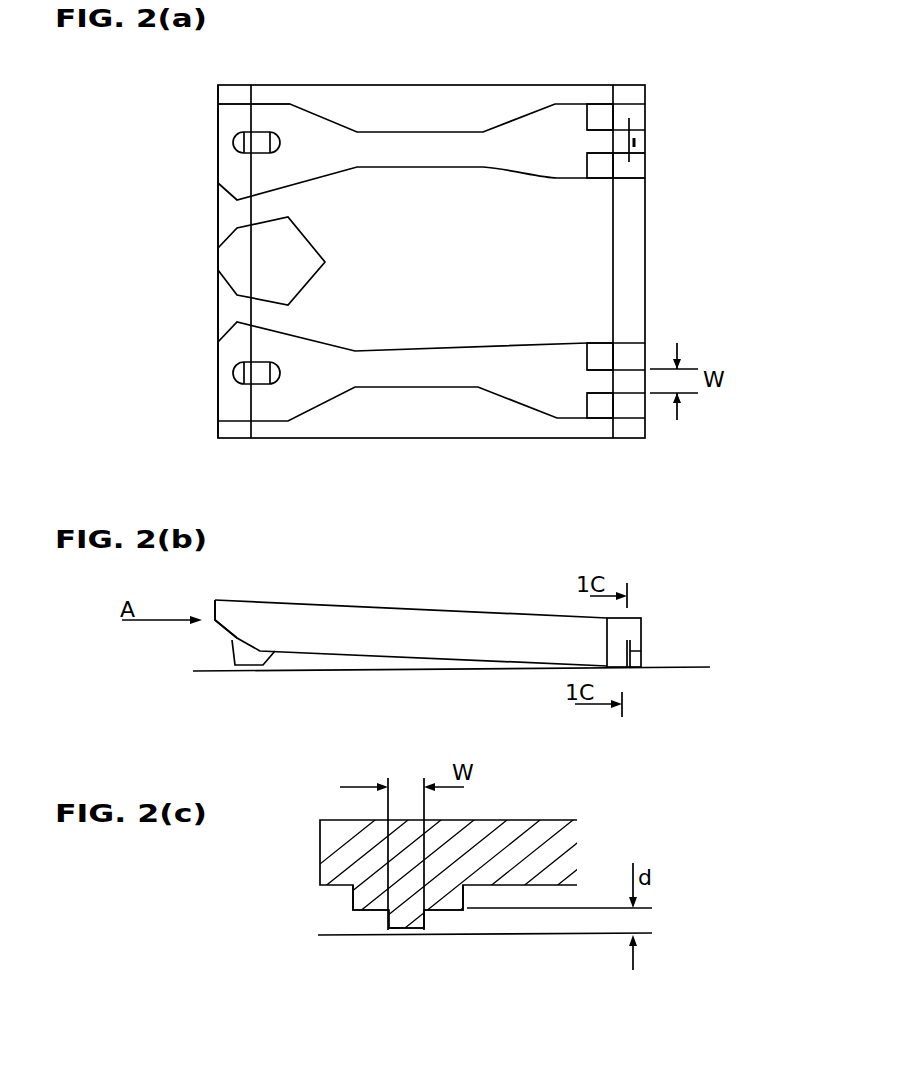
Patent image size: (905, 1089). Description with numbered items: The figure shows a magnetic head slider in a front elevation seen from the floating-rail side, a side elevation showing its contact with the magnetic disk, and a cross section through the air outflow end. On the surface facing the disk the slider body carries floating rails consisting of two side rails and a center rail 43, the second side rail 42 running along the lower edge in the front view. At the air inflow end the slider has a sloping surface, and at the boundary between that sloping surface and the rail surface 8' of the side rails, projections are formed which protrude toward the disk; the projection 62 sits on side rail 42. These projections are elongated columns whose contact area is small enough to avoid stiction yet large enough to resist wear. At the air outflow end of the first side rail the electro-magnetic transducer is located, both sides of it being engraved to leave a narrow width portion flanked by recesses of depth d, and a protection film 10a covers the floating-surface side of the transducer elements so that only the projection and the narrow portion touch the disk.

The rail surface 8' is at (254, 66).
The protection film 10a is at (395, 938).
The side rail 42 is at (437, 380).
The center rail 43 is at (297, 240).
The projection 62 is at (253, 381).